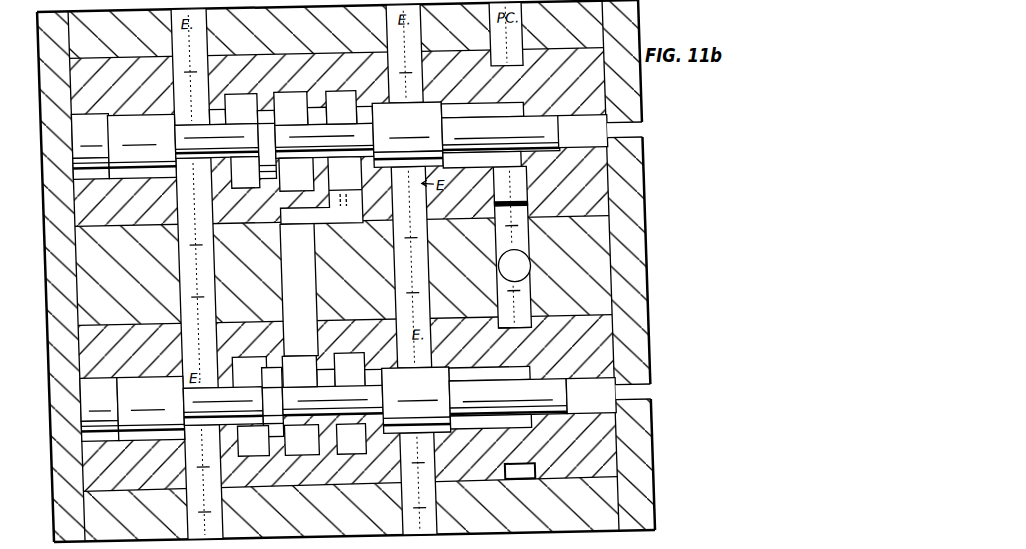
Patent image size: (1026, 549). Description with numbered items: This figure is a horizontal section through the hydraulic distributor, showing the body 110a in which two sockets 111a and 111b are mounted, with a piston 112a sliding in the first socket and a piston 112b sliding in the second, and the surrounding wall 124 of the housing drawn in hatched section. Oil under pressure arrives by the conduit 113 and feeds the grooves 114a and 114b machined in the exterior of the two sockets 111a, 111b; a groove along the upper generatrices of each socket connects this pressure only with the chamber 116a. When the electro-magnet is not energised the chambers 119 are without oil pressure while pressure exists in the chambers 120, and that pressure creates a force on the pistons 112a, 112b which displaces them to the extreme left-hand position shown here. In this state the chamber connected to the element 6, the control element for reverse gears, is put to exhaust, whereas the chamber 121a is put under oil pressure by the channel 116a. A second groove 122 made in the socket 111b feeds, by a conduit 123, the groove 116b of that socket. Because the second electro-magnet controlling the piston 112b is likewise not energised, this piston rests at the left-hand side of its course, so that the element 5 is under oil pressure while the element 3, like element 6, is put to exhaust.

The element 3 is at (253, 441).
The element 5 is at (351, 439).
The element 6 is at (245, 173).
The body 110a is at (391, 508).
The socket 111a is at (601, 134).
The socket 111b is at (609, 388).
The piston 112a is at (407, 134).
The piston 112b is at (416, 400).
The conduit 113 is at (530, 265).
The groove 114a is at (539, 222).
The groove 114b is at (537, 310).
The chamber 116a is at (315, 96).
The groove 116b is at (301, 440).
The chamber 119 is at (127, 276).
The chamber 120 is at (503, 228).
The chamber 121a is at (321, 191).
The second groove 122 is at (299, 372).
The conduit 123 is at (299, 290).
The housing wall 124 is at (364, 271).